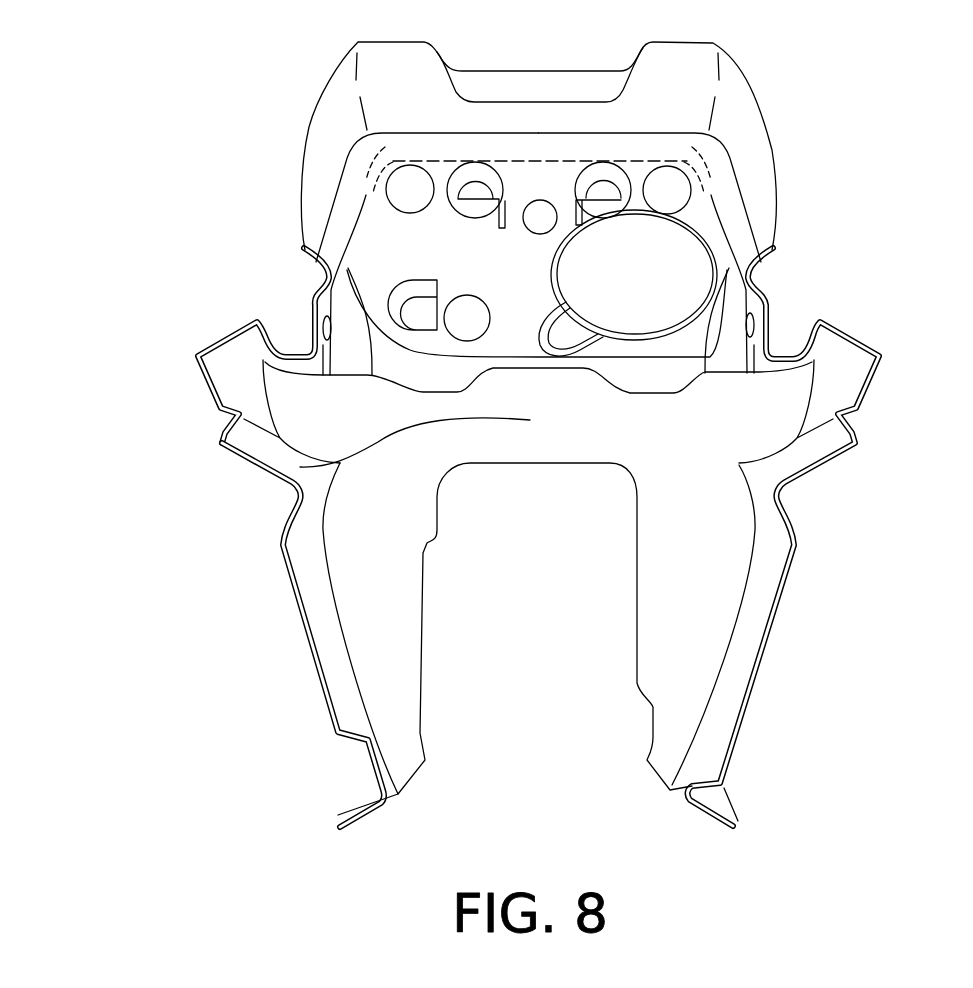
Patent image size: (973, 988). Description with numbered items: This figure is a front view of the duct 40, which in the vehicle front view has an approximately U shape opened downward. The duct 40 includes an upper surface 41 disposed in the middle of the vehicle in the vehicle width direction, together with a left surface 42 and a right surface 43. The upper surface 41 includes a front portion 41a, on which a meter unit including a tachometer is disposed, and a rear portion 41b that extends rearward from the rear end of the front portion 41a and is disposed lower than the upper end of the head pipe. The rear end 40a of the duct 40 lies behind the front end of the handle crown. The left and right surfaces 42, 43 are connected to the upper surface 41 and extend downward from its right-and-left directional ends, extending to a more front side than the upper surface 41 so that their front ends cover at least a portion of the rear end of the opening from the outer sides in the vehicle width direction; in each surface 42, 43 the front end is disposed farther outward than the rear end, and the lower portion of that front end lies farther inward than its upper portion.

The duct 40 is at (852, 170).
The rear end of the duct 40a is at (557, 463).
The upper surface 41 is at (492, 446).
The front portion 41a is at (362, 242).
The rear portion 41b is at (300, 467).
The left surface 42 is at (717, 587).
The right surface 43 is at (355, 595).